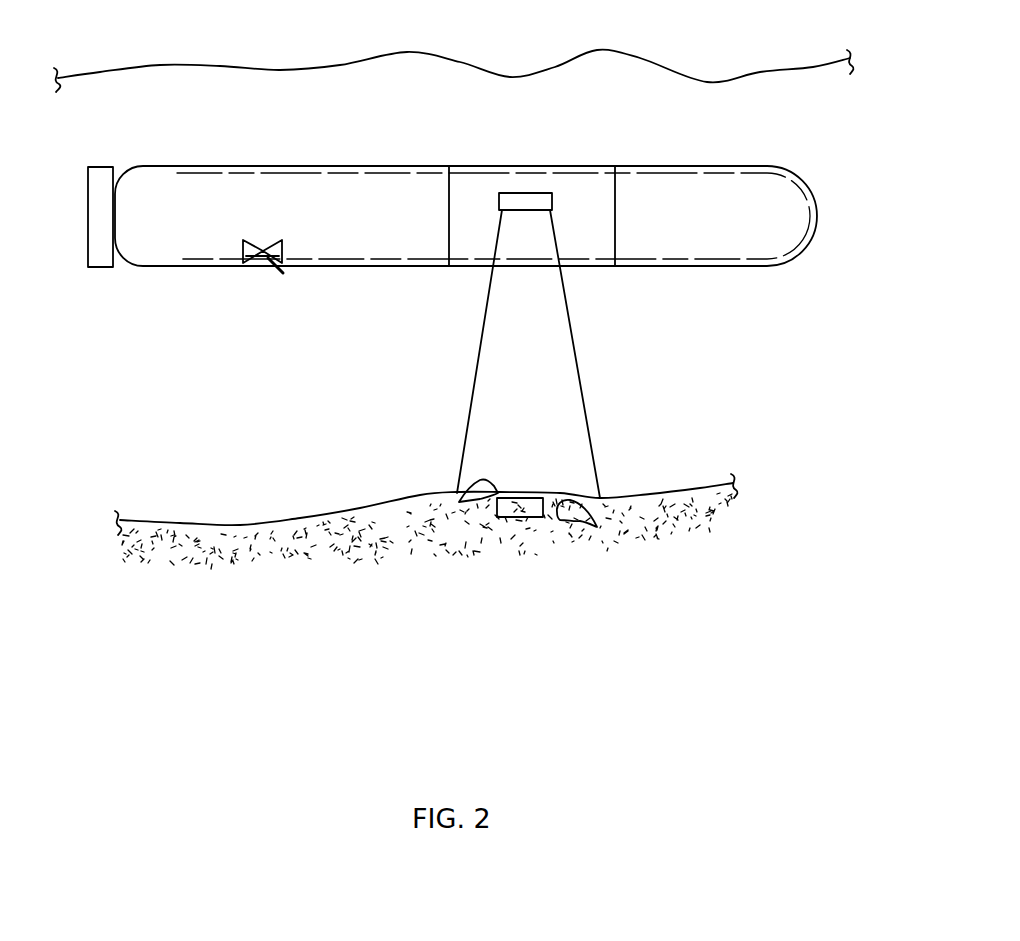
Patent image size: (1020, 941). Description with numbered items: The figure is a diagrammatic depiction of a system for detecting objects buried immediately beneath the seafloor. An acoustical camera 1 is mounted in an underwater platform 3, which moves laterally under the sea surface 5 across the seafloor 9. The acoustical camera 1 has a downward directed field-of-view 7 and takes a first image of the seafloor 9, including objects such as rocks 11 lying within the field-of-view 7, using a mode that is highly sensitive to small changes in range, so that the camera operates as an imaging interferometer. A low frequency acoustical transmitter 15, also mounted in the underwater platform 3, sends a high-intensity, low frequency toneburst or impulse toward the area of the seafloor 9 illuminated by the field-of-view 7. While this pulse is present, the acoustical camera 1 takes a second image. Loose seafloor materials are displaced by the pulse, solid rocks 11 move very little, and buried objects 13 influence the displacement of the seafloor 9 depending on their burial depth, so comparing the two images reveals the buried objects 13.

The acoustical camera 1 is at (520, 193).
The underwater platform 3 is at (788, 172).
The sea surface 5 is at (813, 70).
The field-of-view 7 is at (578, 368).
The seafloor 9 is at (272, 522).
The rocks 11 is at (481, 499).
The buried objects 13 is at (526, 499).
The low frequency acoustical transmitter 15 is at (266, 263).